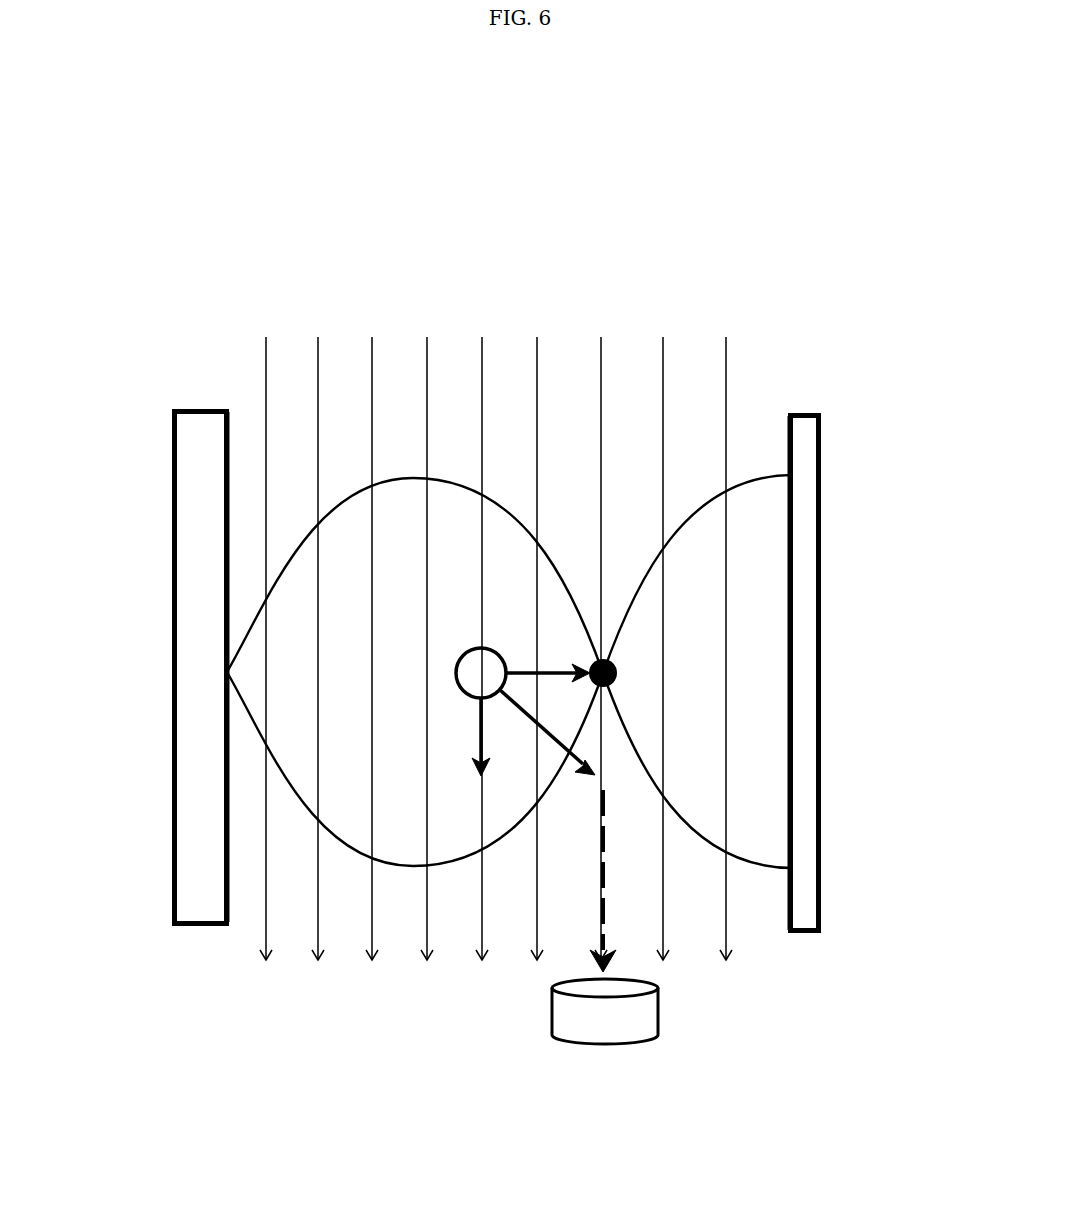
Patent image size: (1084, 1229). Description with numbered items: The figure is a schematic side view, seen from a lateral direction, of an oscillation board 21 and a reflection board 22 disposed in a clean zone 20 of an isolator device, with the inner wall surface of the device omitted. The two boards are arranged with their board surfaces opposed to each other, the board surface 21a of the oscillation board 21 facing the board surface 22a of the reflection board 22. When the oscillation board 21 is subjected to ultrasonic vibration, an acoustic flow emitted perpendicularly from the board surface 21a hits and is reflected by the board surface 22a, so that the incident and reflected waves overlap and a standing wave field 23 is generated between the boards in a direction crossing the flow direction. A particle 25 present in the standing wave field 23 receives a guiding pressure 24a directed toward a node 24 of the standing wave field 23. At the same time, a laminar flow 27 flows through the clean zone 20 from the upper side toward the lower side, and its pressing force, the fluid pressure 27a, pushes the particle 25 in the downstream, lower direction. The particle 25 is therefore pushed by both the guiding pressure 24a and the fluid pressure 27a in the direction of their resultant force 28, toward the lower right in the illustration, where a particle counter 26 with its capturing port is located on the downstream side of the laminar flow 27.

The clean zone 20 is at (700, 316).
The oscillation board 21 is at (197, 588).
The board surface of the oscillation board 21a is at (228, 800).
The reflection board 22 is at (805, 553).
The board surface of the reflection board 22a is at (793, 770).
The standing wave field 23 is at (683, 530).
The node 24 is at (618, 672).
The guiding pressure 24a is at (533, 665).
The particle 25 is at (456, 666).
The particle counter 26 is at (640, 1011).
The laminar flow 27 is at (600, 383).
The fluid pressure 27a is at (475, 722).
The resultant force 28 is at (535, 740).